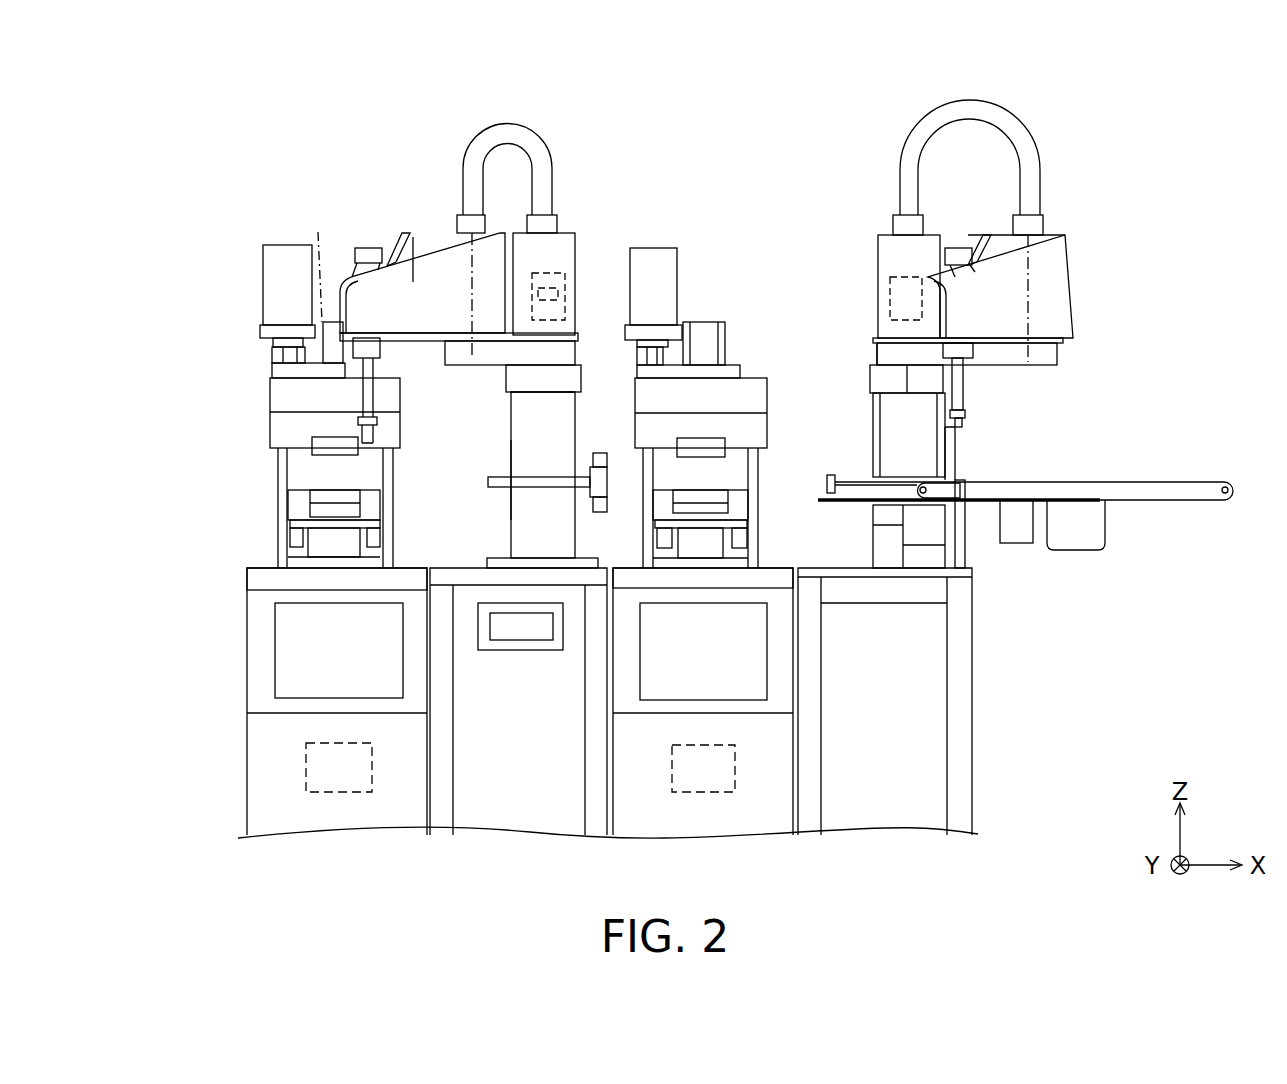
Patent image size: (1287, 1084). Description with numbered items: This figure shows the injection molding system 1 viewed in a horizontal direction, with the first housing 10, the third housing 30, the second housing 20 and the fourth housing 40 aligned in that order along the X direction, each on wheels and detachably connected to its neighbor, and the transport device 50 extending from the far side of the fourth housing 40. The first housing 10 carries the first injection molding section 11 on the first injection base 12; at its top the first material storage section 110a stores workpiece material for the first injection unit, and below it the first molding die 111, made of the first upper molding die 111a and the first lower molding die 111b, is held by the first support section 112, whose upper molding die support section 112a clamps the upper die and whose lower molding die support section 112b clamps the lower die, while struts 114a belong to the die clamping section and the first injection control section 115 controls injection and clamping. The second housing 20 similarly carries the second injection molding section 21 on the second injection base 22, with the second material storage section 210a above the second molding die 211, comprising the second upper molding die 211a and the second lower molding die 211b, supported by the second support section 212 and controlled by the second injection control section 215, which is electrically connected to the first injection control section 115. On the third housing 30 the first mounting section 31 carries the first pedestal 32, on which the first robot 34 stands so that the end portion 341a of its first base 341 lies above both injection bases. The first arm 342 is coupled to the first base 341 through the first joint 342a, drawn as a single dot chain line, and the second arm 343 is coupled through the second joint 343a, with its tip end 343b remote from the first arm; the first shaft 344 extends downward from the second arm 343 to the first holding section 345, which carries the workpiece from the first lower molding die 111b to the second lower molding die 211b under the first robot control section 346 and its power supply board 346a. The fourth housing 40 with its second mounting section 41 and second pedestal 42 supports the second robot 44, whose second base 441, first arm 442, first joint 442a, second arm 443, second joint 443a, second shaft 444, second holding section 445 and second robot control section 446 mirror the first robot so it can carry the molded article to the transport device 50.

The injection molding system 1 is at (212, 118).
The first housing 10 is at (236, 768).
The first injection molding section 11 is at (256, 396).
The first injection base 12 is at (263, 572).
The first material storage section 110a is at (284, 258).
The first molding die 111 is at (259, 476).
The first upper molding die 111a is at (323, 446).
The first lower molding die 111b is at (315, 513).
The first support section 112 is at (303, 551).
The upper molding die support section 112a is at (300, 425).
The lower molding die support section 112b is at (303, 543).
The struts 114a is at (360, 498).
The first injection control section 115 is at (322, 792).
The second housing 20 is at (756, 846).
The second injection molding section 21 is at (776, 366).
The second injection base 22 is at (785, 577).
The second material storage section 210a is at (672, 282).
The second molding die 211 is at (755, 461).
The second upper molding die 211a is at (710, 449).
The second lower molding die 211b is at (715, 513).
The second support section 212 is at (653, 432).
The second injection control section 215 is at (705, 792).
The third housing 30 is at (533, 843).
The first mounting section 31 is at (455, 580).
The first pedestal 32 is at (562, 533).
The first robot 34 is at (541, 110).
The first base 341 is at (560, 427).
The end portion 341a is at (520, 475).
The first arm 342 is at (500, 354).
The first joint 342a is at (535, 372).
The second arm 343 is at (413, 282).
The second joint 343a is at (438, 246).
The tip end 343b is at (340, 322).
The first shaft 344 is at (352, 398).
The first holding section 345 is at (360, 410).
The first robot control section 346 is at (553, 247).
The power supply board 346a is at (565, 292).
The fourth housing 40 is at (888, 846).
The second mounting section 41 is at (972, 572).
The second pedestal 42 is at (942, 537).
The second robot 44 is at (994, 110).
The second base 441 is at (890, 413).
The first arm 442 is at (990, 350).
The first joint 442a is at (880, 362).
The second arm 443 is at (1043, 300).
The second joint 443a is at (1045, 282).
The second shaft 444 is at (962, 385).
The second holding section 445 is at (964, 418).
The second robot control section 446 is at (907, 276).
The transport device 50 is at (1183, 520).